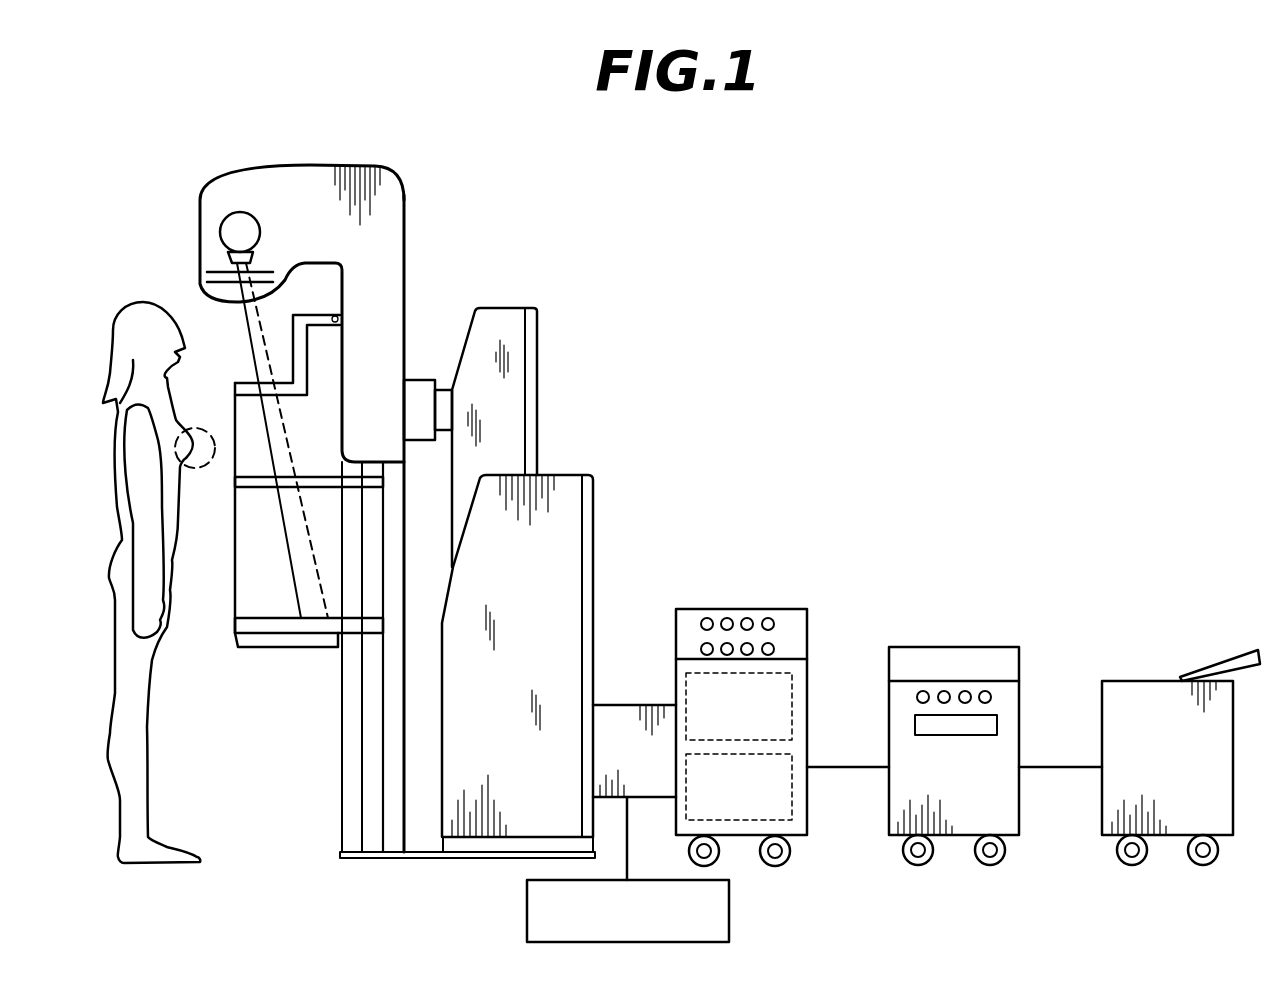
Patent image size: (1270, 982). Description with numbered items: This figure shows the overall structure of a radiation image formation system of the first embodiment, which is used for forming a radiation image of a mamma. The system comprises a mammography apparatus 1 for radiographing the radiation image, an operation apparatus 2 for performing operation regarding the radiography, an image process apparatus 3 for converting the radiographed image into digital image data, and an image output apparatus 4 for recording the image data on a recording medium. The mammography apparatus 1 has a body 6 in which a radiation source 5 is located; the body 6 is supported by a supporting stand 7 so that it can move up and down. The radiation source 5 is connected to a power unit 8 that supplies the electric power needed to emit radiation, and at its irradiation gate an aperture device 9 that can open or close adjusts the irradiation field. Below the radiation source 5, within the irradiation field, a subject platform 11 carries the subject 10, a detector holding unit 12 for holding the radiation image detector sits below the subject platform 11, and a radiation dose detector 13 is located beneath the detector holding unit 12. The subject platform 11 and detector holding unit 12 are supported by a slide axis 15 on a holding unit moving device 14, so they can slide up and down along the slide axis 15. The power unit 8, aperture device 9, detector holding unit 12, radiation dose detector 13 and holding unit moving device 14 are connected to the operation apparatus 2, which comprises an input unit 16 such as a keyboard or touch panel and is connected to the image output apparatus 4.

The mammography apparatus 1 is at (438, 185).
The operation apparatus 2 is at (752, 552).
The image process apparatus 3 is at (968, 600).
The image output apparatus 4 is at (1172, 605).
The radiation source 5 is at (238, 213).
The body 6 is at (407, 237).
The supporting stand 7 is at (555, 475).
The power unit 8 is at (730, 903).
The aperture device 9 is at (205, 270).
The subject 10 is at (197, 425).
The subject platform 11 is at (236, 480).
The detector holding unit 12 is at (233, 622).
The radiation dose detector 13 is at (260, 638).
The holding unit moving device 14 is at (352, 808).
The slide axis 15 is at (370, 738).
The input unit 16 is at (787, 637).